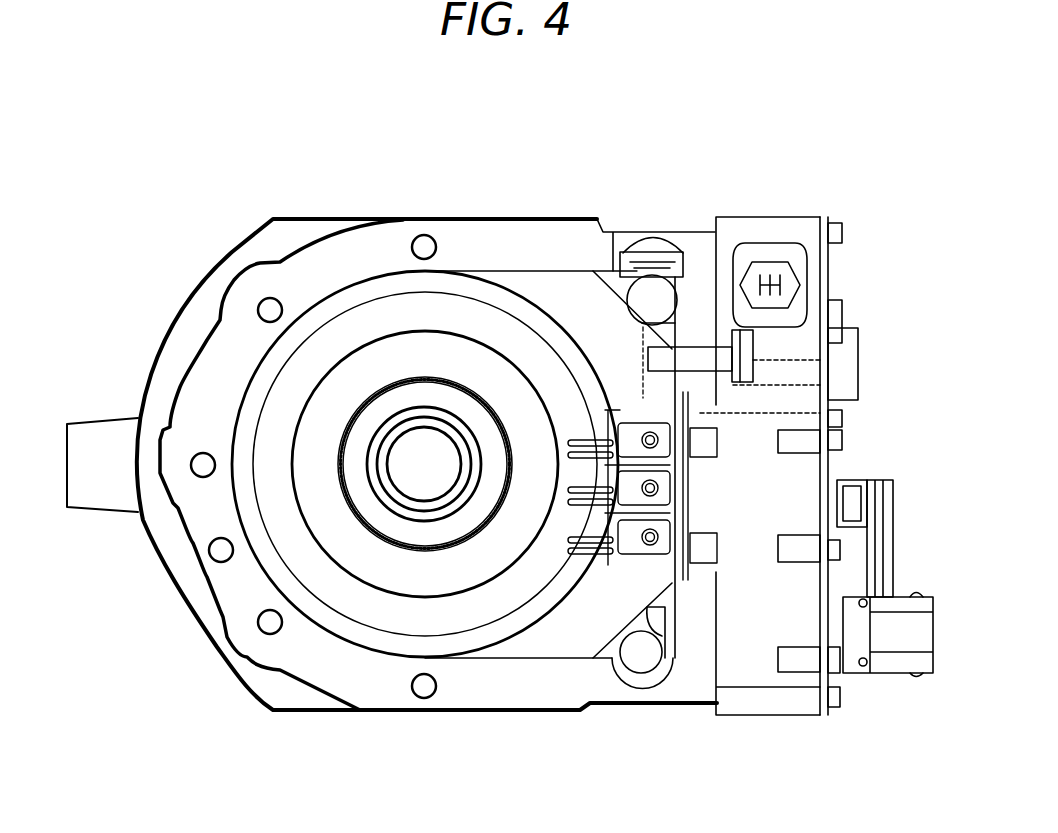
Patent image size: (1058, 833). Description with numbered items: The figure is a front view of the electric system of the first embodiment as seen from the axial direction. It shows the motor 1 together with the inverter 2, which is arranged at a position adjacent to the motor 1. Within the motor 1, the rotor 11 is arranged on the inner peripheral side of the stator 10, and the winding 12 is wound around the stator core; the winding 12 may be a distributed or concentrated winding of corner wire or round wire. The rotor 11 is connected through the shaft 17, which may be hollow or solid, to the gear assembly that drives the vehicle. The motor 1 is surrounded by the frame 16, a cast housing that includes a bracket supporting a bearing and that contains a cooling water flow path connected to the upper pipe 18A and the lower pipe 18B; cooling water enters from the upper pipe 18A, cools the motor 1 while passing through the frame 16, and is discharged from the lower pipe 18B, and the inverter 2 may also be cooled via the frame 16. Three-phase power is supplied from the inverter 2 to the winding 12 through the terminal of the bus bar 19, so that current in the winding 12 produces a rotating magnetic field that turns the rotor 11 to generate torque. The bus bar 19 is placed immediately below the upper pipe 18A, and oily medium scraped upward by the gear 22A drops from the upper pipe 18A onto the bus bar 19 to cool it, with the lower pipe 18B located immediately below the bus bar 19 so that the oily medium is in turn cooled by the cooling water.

The motor 1 is at (453, 220).
The inverter 2 is at (771, 217).
The stator 10 is at (300, 317).
The rotor 11 is at (347, 553).
The winding 12 is at (380, 312).
The frame 16 is at (257, 262).
The shaft 17 is at (401, 487).
The upper pipe 18A is at (656, 288).
The lower pipe 18B is at (648, 663).
The bus bar 19 is at (608, 400).
The gear 22A is at (435, 543).